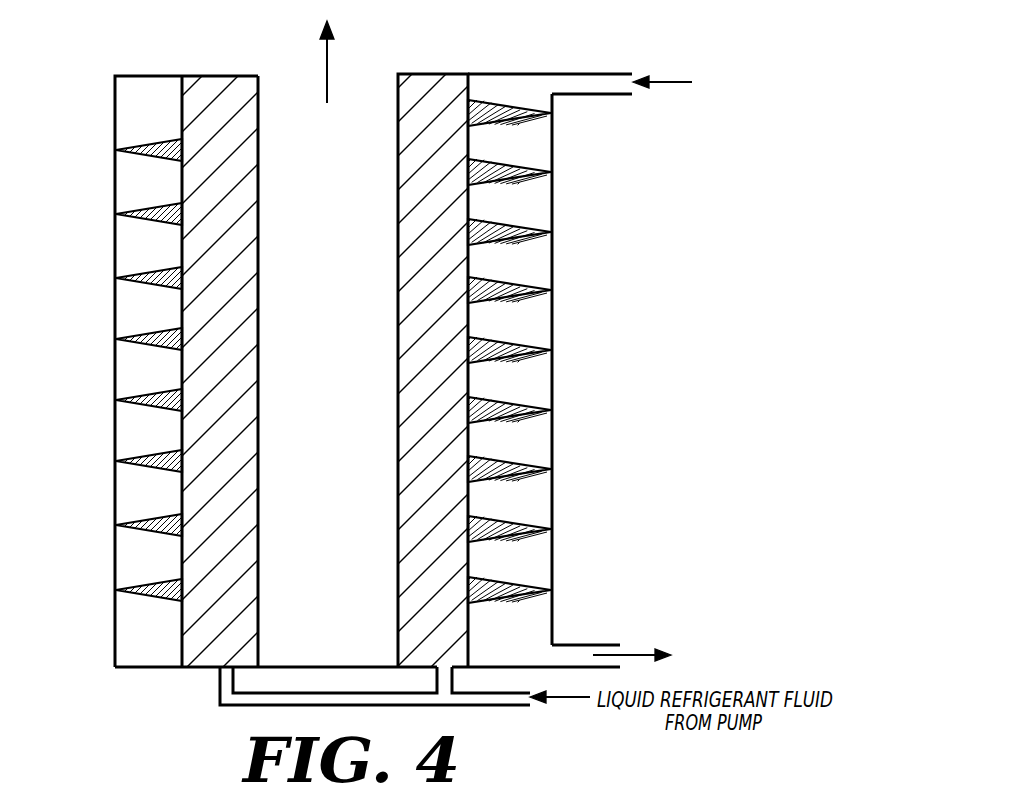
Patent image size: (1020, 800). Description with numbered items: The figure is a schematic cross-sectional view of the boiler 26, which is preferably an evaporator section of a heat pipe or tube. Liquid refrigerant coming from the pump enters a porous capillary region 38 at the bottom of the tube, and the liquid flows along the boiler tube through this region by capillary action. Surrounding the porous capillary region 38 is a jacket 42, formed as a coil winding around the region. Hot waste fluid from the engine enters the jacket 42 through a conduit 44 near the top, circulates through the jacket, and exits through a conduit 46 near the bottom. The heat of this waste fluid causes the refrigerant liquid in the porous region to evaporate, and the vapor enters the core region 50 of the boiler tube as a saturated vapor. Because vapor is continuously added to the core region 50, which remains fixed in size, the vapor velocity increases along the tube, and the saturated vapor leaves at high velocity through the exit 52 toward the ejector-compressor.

The boiler 26 is at (115, 465).
The porous capillary region 38 is at (208, 369).
The jacket 42 is at (507, 557).
The conduit 44 is at (577, 84).
The conduit 46 is at (570, 653).
The core region 50 is at (323, 269).
The exit 52 is at (297, 100).